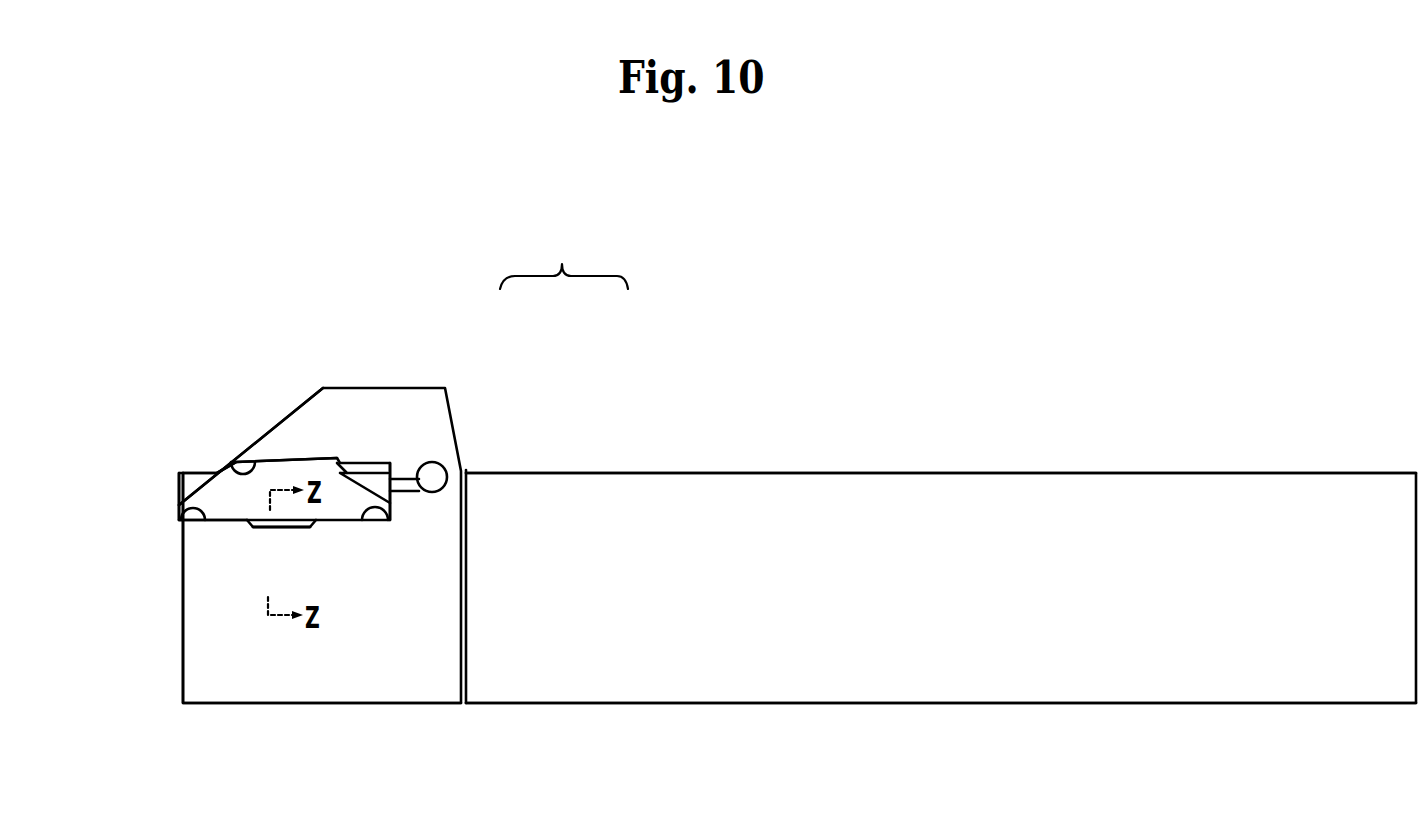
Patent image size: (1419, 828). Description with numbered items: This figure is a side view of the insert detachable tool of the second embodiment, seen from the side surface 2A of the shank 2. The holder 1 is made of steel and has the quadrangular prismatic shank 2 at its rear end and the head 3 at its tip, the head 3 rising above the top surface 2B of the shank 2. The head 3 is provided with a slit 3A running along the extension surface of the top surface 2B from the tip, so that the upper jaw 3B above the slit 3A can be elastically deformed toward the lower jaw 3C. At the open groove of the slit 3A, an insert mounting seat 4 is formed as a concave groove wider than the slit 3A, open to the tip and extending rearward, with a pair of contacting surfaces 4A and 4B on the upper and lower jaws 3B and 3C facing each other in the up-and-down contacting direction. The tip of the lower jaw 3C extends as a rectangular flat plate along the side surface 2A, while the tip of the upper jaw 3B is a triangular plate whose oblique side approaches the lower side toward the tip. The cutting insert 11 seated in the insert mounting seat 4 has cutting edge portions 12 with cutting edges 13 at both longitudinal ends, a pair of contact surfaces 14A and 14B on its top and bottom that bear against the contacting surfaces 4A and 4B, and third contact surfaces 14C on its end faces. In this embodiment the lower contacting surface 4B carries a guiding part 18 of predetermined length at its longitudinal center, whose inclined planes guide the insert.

The holder 1 is at (564, 259).
The shank 2 is at (654, 390).
The side surface 2A is at (867, 670).
The top surface 2B is at (873, 472).
The head 3 is at (439, 354).
The slit 3A is at (408, 468).
The upper jaw 3B is at (318, 410).
The lower jaw 3C is at (247, 667).
The insert mounting seat 4 is at (313, 548).
The contacting surface 4A is at (230, 457).
The contacting surface 4B is at (178, 503).
The cutting insert 11 is at (191, 416).
The cutting edge portion 12 is at (182, 448).
The cutting edge 13 is at (178, 470).
The contact surface 14A is at (277, 457).
The contact surface 14B is at (202, 523).
The third contact surface 14C is at (393, 510).
The guiding part 18 is at (262, 530).